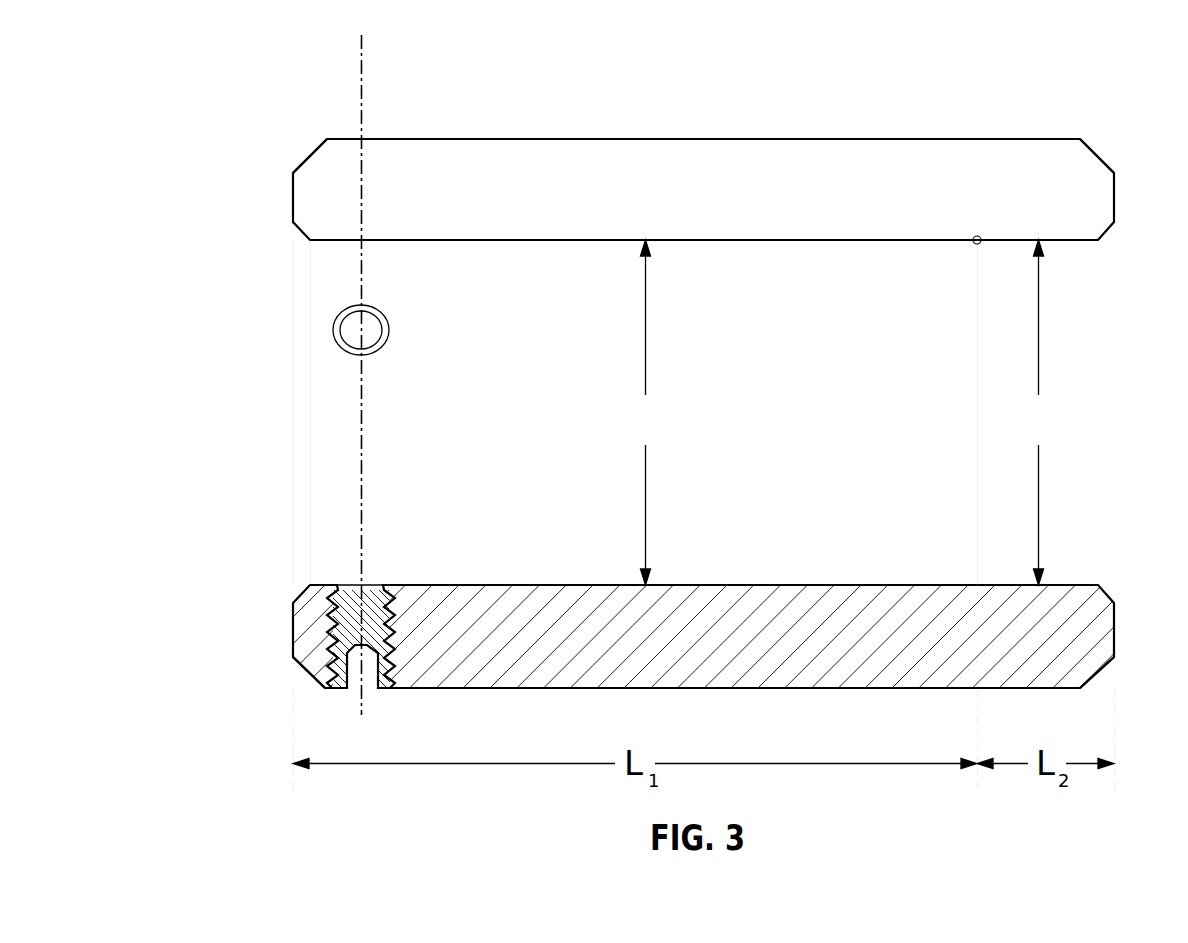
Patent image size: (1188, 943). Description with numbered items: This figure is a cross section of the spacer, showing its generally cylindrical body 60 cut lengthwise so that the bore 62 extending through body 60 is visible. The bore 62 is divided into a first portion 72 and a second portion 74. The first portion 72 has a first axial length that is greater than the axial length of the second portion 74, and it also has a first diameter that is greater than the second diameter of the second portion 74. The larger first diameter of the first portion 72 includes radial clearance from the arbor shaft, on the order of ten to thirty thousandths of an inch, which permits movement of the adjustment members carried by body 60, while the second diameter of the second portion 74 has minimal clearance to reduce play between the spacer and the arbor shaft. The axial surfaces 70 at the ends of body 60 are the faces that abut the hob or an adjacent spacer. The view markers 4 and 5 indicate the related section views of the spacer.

The body 60 is at (565, 139).
The bore 62 is at (322, 442).
The axial surfaces 70 is at (293, 185).
The first portion 72 is at (470, 268).
The second portion 74 is at (980, 369).
The section view 4 indicator 4 is at (976, 236).
The section line 5- 5 is at (361, 36).